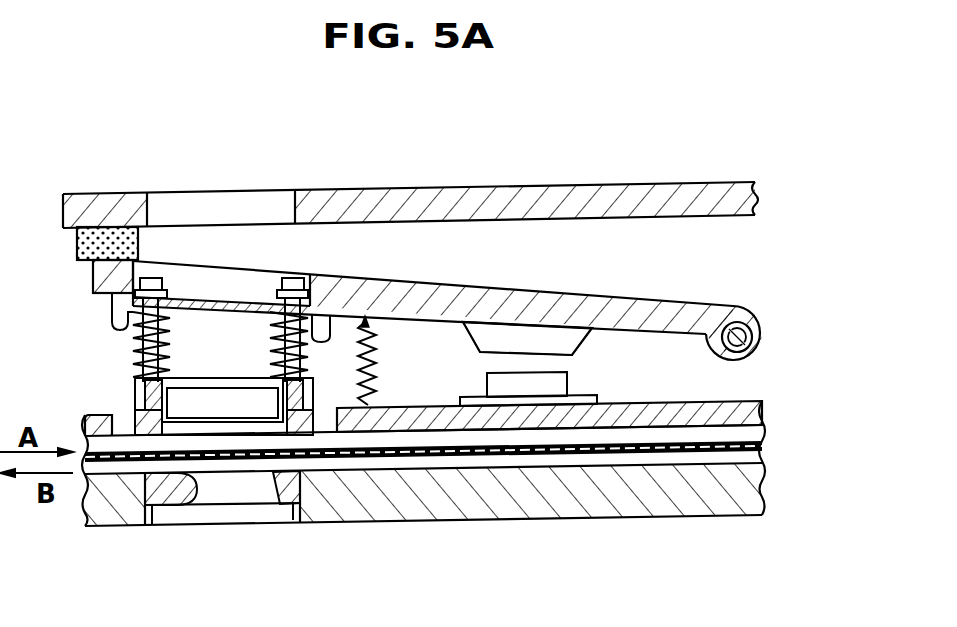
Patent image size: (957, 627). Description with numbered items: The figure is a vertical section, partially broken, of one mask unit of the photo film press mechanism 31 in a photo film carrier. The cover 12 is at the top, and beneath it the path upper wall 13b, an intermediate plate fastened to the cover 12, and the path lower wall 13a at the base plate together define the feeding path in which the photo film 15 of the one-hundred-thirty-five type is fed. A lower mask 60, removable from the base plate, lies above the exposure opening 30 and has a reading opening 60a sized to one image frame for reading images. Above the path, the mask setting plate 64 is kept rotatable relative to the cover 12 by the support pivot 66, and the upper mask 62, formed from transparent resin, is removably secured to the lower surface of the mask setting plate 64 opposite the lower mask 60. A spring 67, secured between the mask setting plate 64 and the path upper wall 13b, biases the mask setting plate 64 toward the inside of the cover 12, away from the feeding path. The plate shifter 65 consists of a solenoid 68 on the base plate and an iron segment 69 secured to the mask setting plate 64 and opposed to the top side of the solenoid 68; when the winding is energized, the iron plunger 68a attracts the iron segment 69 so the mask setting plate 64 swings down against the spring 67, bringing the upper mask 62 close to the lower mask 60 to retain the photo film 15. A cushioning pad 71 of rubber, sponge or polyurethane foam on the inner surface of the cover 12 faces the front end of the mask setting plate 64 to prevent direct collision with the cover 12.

The cover 12 is at (388, 172).
The path lower wall 13a is at (423, 508).
The path upper wall 13b is at (402, 422).
The photo film 15 is at (655, 447).
The exposure opening 30 is at (296, 505).
The photo film press mechanism 31 is at (436, 266).
The lower mask 60 is at (258, 530).
The reading opening 60a is at (190, 526).
The upper mask 62 is at (112, 357).
The mask setting plate 64 is at (425, 266).
The plate shifter 65 is at (545, 229).
The support pivot 66 is at (750, 334).
The spring 67 is at (383, 370).
The solenoid 68 is at (600, 347).
The plunger 68a is at (492, 380).
The iron segment 69 is at (513, 337).
The cushioning pad 71 is at (102, 238).